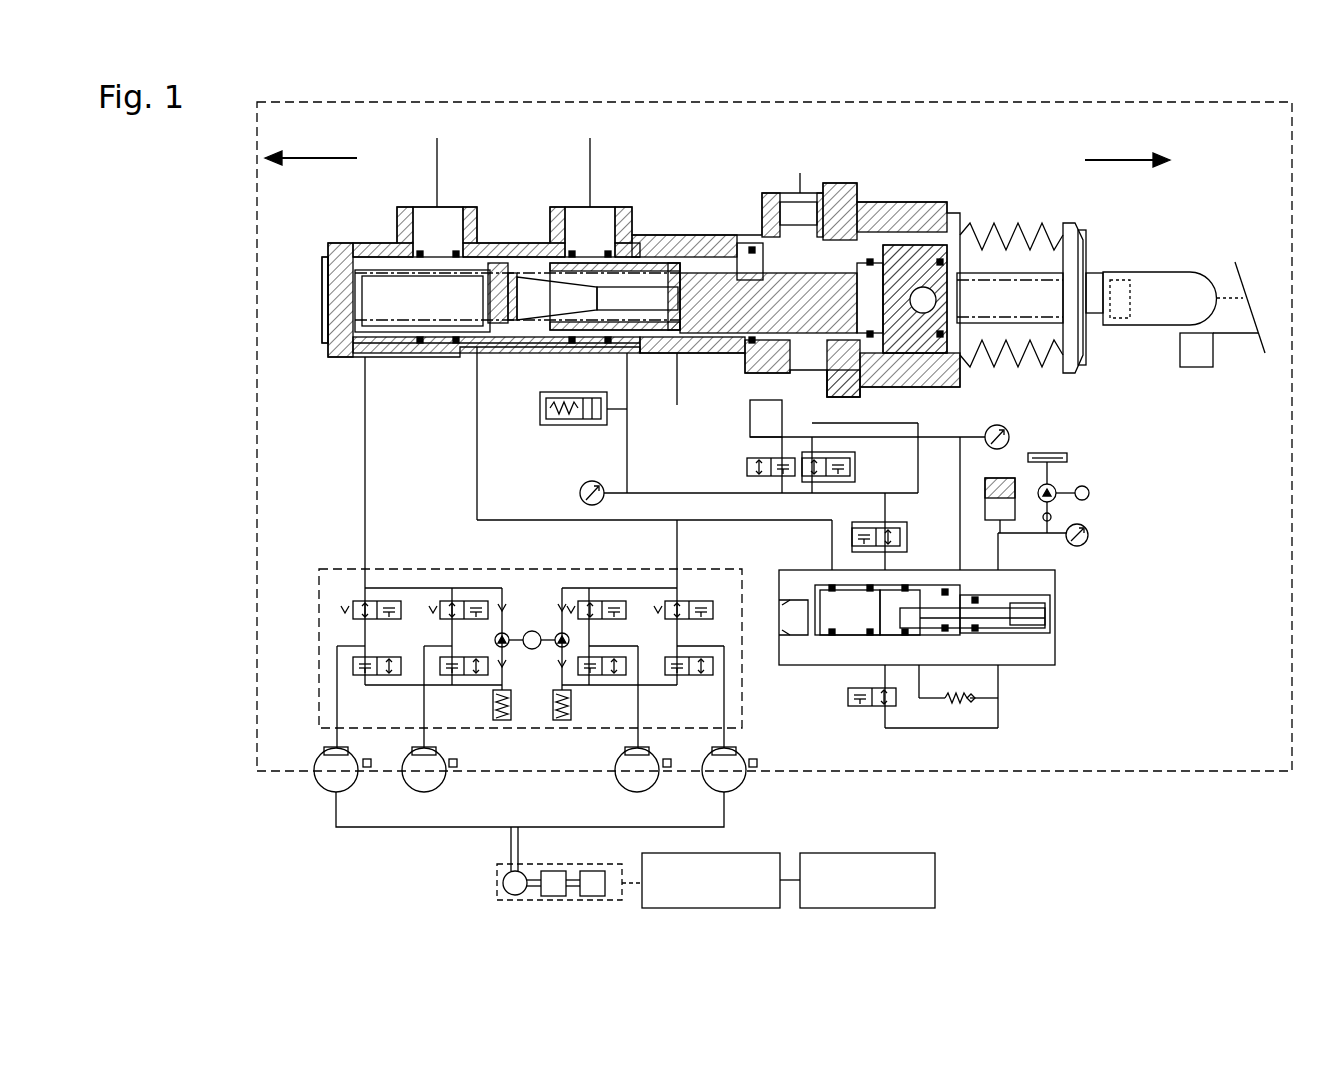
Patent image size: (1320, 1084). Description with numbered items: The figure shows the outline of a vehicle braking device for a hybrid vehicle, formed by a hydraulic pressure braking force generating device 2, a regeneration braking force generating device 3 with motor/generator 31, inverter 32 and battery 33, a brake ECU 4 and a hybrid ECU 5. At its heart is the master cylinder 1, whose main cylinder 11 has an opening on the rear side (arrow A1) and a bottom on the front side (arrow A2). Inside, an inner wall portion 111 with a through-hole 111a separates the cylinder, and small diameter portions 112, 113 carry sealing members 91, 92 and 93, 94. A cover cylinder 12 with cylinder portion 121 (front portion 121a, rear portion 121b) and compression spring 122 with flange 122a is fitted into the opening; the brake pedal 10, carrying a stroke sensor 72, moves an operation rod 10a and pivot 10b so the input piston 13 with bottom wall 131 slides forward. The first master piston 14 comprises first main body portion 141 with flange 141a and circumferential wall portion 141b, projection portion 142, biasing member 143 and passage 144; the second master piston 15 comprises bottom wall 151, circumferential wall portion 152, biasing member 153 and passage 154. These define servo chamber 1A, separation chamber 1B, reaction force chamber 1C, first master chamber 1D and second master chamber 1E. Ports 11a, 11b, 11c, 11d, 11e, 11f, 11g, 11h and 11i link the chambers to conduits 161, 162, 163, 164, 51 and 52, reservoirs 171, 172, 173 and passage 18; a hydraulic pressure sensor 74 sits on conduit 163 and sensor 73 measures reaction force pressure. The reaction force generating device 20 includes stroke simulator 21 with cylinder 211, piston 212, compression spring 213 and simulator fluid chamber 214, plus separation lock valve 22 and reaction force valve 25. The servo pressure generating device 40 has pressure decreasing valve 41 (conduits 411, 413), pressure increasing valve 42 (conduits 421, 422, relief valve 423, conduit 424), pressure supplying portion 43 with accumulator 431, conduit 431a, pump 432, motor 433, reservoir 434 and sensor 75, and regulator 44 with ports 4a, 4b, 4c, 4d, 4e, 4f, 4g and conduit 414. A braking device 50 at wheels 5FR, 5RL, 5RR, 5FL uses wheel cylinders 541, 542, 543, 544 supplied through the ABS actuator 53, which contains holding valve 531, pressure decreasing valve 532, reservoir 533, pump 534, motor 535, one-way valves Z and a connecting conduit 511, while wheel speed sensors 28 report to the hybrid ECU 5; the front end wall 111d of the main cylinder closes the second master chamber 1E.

The master cylinder 1 is at (1183, 194).
The hydraulic pressure braking force generating device 2 is at (250, 422).
The regeneration braking force generating device 3 is at (498, 864).
The brake ECU 4 is at (910, 853).
The hybrid ECU 5 is at (752, 853).
The brake pedal 10 is at (1238, 262).
The operation rod 10a is at (1070, 250).
The pivot 10b is at (1010, 290).
The main cylinder 11 is at (343, 238).
The port 11a is at (800, 362).
The port 11b is at (830, 188).
The port 11c is at (770, 365).
The port 11d is at (740, 360).
The port 11e is at (630, 352).
The port 11f is at (590, 250).
The port 11g is at (480, 396).
The port 11h is at (440, 250).
The port 11i is at (347, 356).
The inner wall portion 111 is at (752, 248).
The through-hole 111a is at (740, 240).
The end wall 111d is at (330, 333).
The small diameter portion 112 is at (592, 346).
The small diameter portion 113 is at (475, 346).
The cover cylinder 12 is at (1070, 418).
The cylinder portion 121 is at (1074, 390).
The front portion 121a is at (935, 345).
The rear portion 121b is at (960, 350).
The compression spring 122 is at (1070, 372).
The flange 122a is at (1085, 270).
The input piston 13 is at (935, 300).
The bottom wall 131 is at (935, 260).
The first master piston 14 is at (650, 383).
The first main body portion 141 is at (613, 172).
The flange 141a is at (700, 240).
The circumferential wall portion 141b is at (660, 262).
The projection portion 142 is at (830, 270).
The biasing member 143 is at (510, 275).
The passage 144 is at (540, 277).
The second master piston 15 is at (497, 270).
The bottom wall 151 is at (495, 346).
The circumferential wall portion 152 is at (435, 346).
The biasing member 153 is at (375, 275).
The passage 154 is at (428, 240).
The conduit 161 is at (845, 423).
The conduit 162 is at (783, 405).
The conduit 163 is at (750, 420).
The conduit 164 is at (628, 400).
The reservoir 171 is at (790, 168).
The reservoir 172 is at (580, 133).
The reservoir 173 is at (427, 133).
The passage 18 is at (870, 290).
The servo chamber 1A is at (730, 340).
The separation chamber 1B is at (875, 330).
The reaction force chamber 1C is at (660, 350).
The first master chamber 1D is at (520, 410).
The second master chamber 1E is at (382, 356).
The reaction force generating device 20 is at (578, 478).
The stroke simulator 21 is at (556, 393).
The cylinder 211 is at (570, 393).
The piston 212 is at (585, 420).
The compression spring 213 is at (555, 420).
The simulator fluid chamber 214 is at (598, 420).
The separation lock valve 22 is at (762, 458).
The reaction force valve 25 is at (810, 458).
The vehicle wheel speed sensor 28 is at (371, 763).
The motor/generator 31 is at (503, 883).
The inverter 32 is at (553, 871).
The battery 33 is at (592, 871).
The servo pressure generating device 40 is at (1097, 592).
The pressure decreasing valve 41 is at (850, 530).
The conduit 411 is at (902, 493).
The conduit 413 is at (885, 560).
The conduit 414 is at (919, 513).
The pressure increasing valve 42 is at (848, 708).
The conduit 421 is at (885, 680).
The conduit 422 is at (905, 728).
The relief valve 423 is at (958, 702).
The conduit 424 is at (918, 700).
The pressure supplying portion 43 is at (1117, 489).
The accumulator 431 is at (987, 496).
The conduit 431a is at (1003, 534).
The pump 432 is at (1047, 487).
The motor 433 is at (1086, 488).
The reservoir 434 is at (1067, 457).
The regulator 44 is at (1056, 640).
The port 4a is at (1005, 575).
The port 4b is at (1000, 668).
The port 4c is at (963, 575).
The port 4d is at (922, 575).
The port 4e is at (922, 668).
The port 4f is at (893, 575).
The port 4g is at (887, 668).
The braking device 50 is at (462, 562).
The conduit 51 is at (477, 470).
The pipe 511 is at (760, 520).
The conduit 52 is at (365, 481).
The ABS actuator 53 is at (600, 570).
The holding valve 531 is at (390, 600).
The pressure decreasing valve 532 is at (382, 658).
The reservoir 533 is at (511, 701).
The pump 534 is at (507, 633).
The motor 535 is at (536, 630).
The wheel cylinder 541 is at (348, 752).
The wheel cylinder 542 is at (436, 752).
The wheel cylinder 543 is at (650, 752).
The wheel cylinder 544 is at (737, 752).
The front right wheel 5FR is at (348, 785).
The rear left wheel 5RL is at (434, 786).
The rear right wheel 5RR is at (647, 786).
The front left wheel 5FL is at (736, 785).
The stroke sensor 72 is at (1200, 368).
The hydraulic pressure sensor 73 is at (598, 482).
The hydraulic pressure sensor 74 is at (988, 444).
The hydraulic pressure sensor 75 is at (1087, 542).
The sealing member 91 is at (595, 245).
The sealing member 92 is at (568, 252).
The sealing member 93 is at (455, 252).
The sealing member 94 is at (418, 252).
The arrow A1 (rear direction) A1 is at (1112, 158).
The arrow A2 (front direction) A2 is at (325, 158).
The one-way valve Z is at (855, 470).